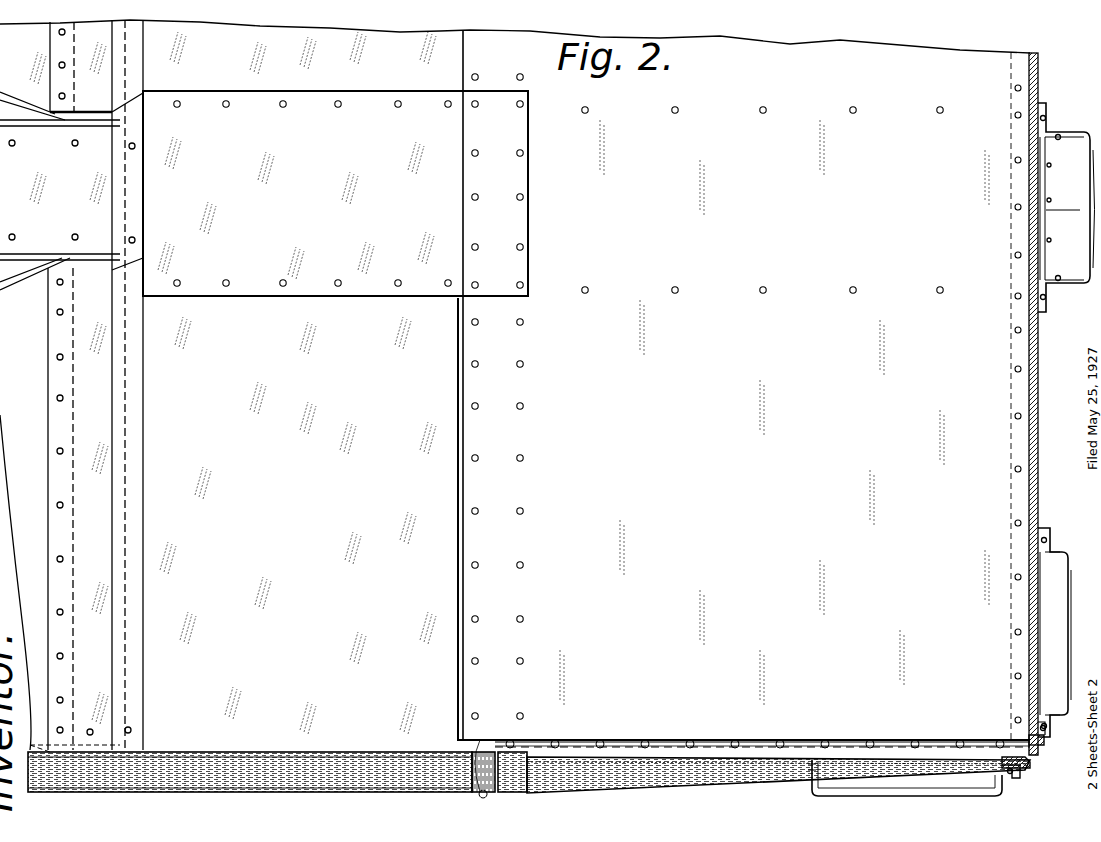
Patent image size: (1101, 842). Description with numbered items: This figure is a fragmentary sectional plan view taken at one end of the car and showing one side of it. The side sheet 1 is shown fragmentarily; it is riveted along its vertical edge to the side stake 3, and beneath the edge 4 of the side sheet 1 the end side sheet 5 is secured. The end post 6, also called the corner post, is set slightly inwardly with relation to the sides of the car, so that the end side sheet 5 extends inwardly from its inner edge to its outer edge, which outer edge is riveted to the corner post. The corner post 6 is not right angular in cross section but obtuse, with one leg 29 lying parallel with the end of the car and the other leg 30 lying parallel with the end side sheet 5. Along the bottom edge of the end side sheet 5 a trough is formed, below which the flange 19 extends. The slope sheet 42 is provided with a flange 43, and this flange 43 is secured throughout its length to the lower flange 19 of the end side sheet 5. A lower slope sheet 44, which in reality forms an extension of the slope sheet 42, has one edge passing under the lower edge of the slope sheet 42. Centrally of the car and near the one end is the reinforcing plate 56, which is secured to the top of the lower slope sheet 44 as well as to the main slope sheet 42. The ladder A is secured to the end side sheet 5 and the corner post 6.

The side sheet 1 is at (322, 792).
The side stake 3 is at (492, 792).
The edge of the side sheet 4 is at (527, 792).
The end side sheet 5 is at (713, 777).
The end post 6 is at (1030, 760).
The flange 19 is at (644, 741).
The leg of corner post 29 is at (1045, 740).
The leg of corner post 30 is at (1017, 779).
The slope sheet 42 is at (744, 385).
The flange 43 is at (725, 741).
The lower slope sheet 44 is at (300, 391).
The reinforcing plate 56 is at (335, 193).
The ladder A is at (880, 797).